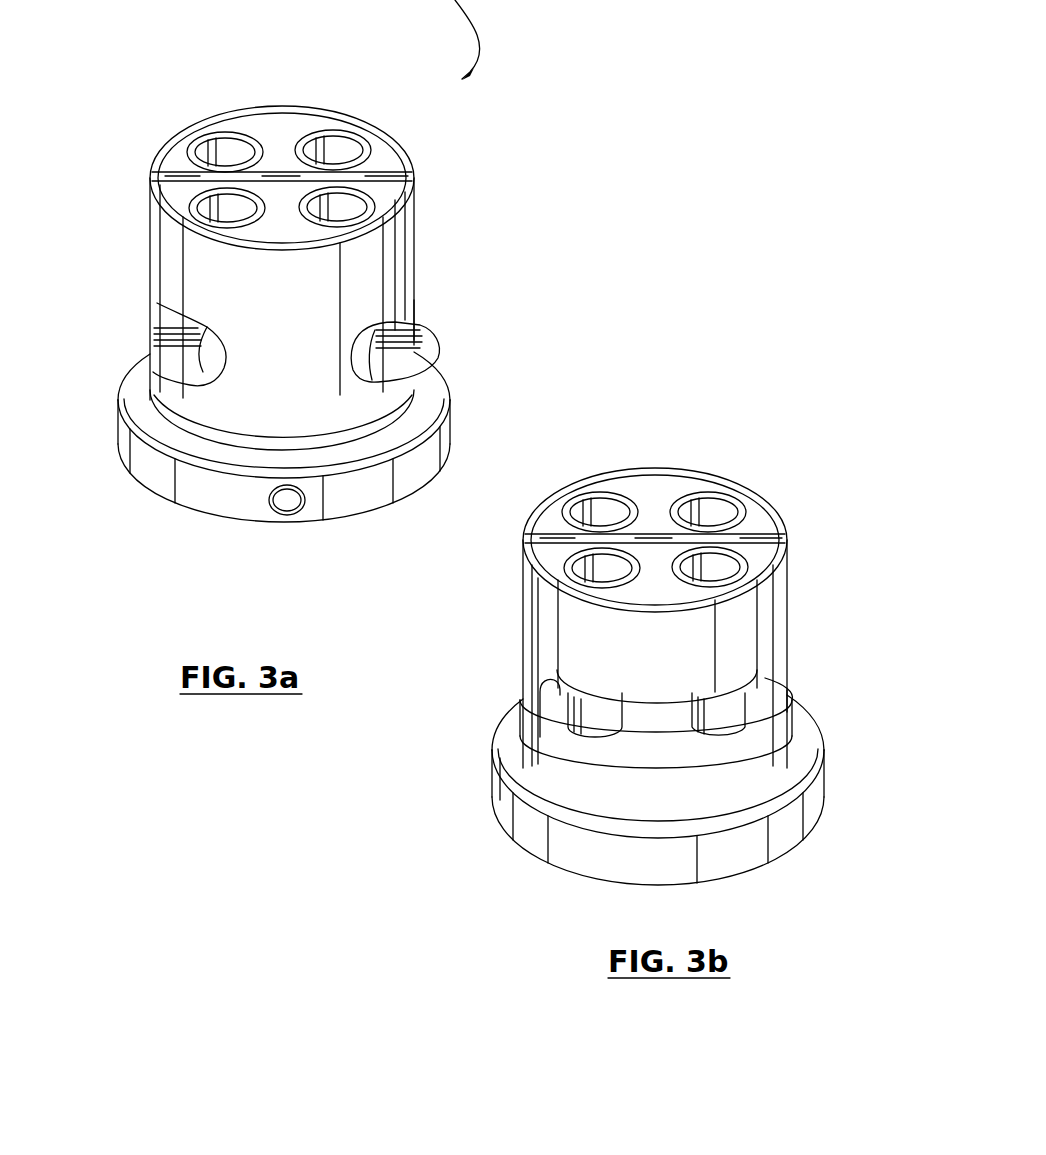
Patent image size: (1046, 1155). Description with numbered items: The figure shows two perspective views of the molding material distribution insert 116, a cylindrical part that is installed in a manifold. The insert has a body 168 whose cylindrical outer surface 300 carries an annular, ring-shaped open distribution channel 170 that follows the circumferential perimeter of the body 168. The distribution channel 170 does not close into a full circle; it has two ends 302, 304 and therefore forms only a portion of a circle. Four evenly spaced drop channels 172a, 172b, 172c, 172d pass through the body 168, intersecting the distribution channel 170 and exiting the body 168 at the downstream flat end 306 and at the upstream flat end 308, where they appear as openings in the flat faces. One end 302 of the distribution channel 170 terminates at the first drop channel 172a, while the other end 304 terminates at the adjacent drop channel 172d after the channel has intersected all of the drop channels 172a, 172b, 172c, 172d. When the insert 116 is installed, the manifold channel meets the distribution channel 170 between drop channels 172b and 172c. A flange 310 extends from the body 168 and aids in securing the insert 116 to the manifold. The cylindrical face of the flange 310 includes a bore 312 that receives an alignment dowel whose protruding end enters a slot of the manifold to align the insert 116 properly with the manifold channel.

In FIG. 3B, the molding material distribution insert 116 is at (826, 452).
In FIG. 3A, the body 168 is at (150, 240).
In FIG. 3B, the body 168 is at (540, 624).
In FIG. 3A, the distribution channel 170 is at (408, 323).
In FIG. 3B, the distribution channel 170 is at (776, 683).
In FIG. 3A, the first drop channel 172a is at (215, 210).
In FIG. 3B, the first drop channel 172a is at (592, 512).
In FIG. 3A, the drop channel 172b is at (212, 150).
In FIG. 3B, the drop channel 172b is at (706, 509).
In FIG. 3A, the drop channel 172c is at (334, 148).
In FIG. 3B, the drop channel 172c is at (722, 568).
In FIG. 3A, the drop channel 172d is at (347, 208).
In FIG. 3B, the drop channel 172d is at (583, 576).
In FIG. 3A, the cylindrical outer surface 300 is at (400, 250).
In FIG. 3B, the cylindrical outer surface 300 is at (778, 612).
In FIG. 3A, the end of distribution channel 302 is at (150, 345).
In FIG. 3A, the end of distribution channel 304 is at (422, 360).
In FIG. 3B, the end of distribution channel 304 is at (540, 710).
In FIG. 3A, the downstream flat end 306 is at (152, 500).
In FIG. 3B, the downstream flat end 306 is at (543, 861).
In FIG. 3A, the upstream flat end 308 is at (260, 128).
In FIG. 3B, the upstream flat end 308 is at (655, 480).
In FIG. 3A, the flange 310 is at (122, 447).
In FIG. 3B, the flange 310 is at (505, 803).
In FIG. 3A, the bore 312 is at (287, 508).